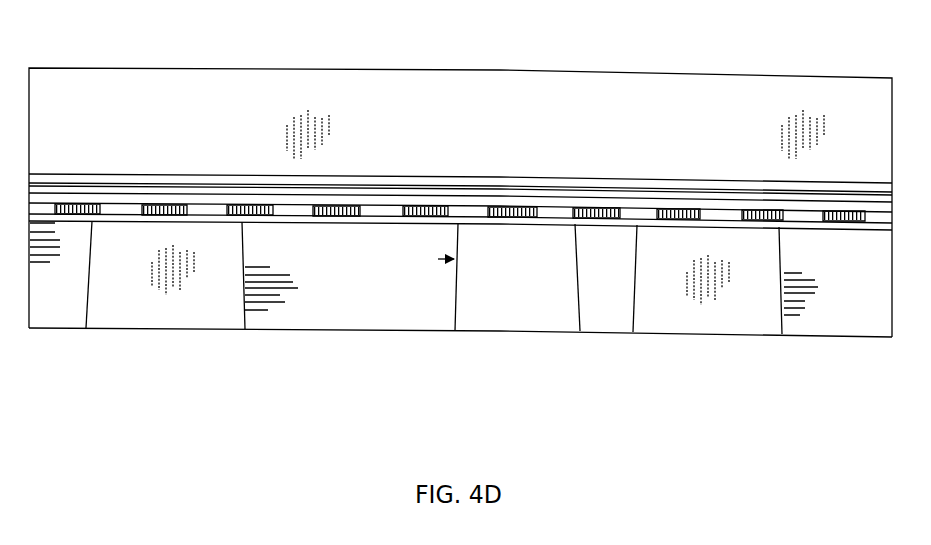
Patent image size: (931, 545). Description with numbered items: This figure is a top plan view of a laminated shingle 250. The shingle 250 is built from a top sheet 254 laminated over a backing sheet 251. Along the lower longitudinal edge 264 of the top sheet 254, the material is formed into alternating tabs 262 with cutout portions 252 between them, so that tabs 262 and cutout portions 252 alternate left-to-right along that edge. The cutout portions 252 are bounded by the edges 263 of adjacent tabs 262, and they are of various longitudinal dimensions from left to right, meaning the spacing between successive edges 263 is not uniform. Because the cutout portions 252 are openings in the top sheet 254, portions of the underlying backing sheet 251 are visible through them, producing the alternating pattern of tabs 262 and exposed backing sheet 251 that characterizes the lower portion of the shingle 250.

The shingle 250 is at (472, 67).
The backing sheet 251 is at (859, 332).
The cutout portions 252 is at (65, 311).
The top sheet 254 is at (478, 137).
The tabs 262 is at (162, 310).
The edges of tabs 263 is at (86, 268).
The lower longitudinal edge 264 is at (342, 333).